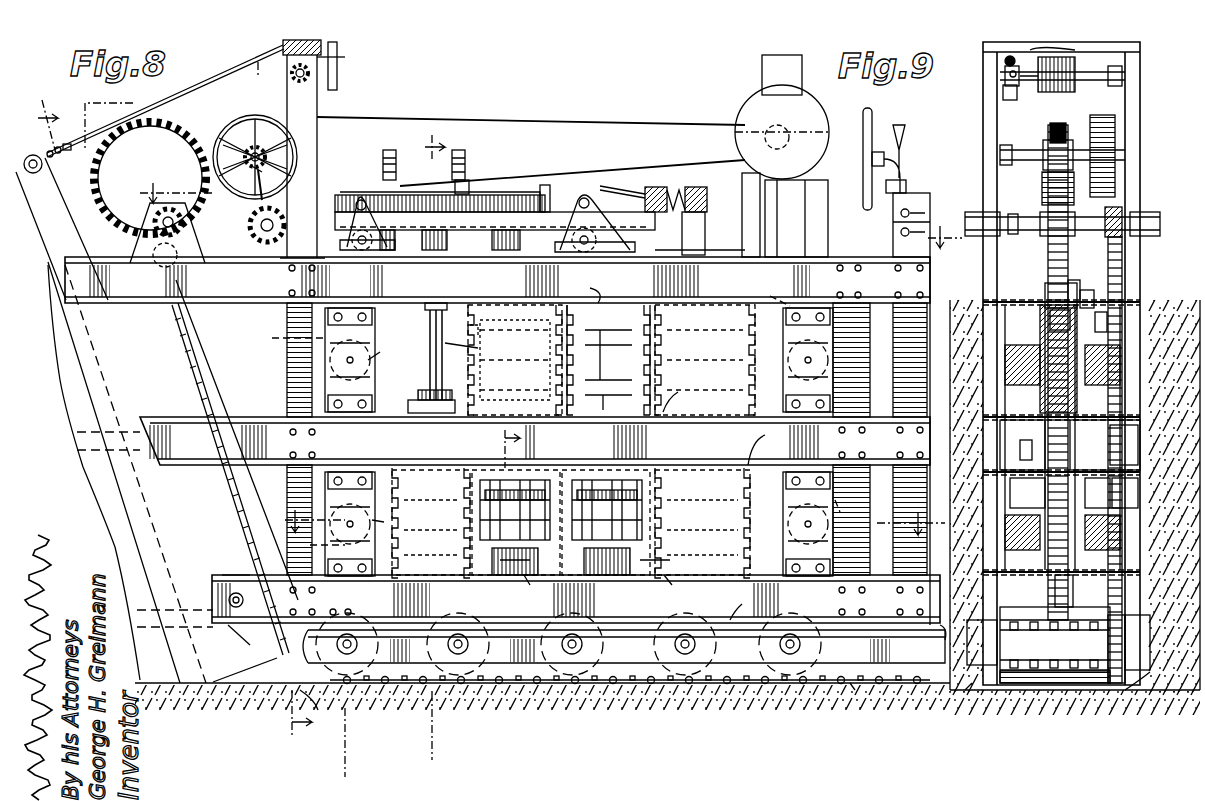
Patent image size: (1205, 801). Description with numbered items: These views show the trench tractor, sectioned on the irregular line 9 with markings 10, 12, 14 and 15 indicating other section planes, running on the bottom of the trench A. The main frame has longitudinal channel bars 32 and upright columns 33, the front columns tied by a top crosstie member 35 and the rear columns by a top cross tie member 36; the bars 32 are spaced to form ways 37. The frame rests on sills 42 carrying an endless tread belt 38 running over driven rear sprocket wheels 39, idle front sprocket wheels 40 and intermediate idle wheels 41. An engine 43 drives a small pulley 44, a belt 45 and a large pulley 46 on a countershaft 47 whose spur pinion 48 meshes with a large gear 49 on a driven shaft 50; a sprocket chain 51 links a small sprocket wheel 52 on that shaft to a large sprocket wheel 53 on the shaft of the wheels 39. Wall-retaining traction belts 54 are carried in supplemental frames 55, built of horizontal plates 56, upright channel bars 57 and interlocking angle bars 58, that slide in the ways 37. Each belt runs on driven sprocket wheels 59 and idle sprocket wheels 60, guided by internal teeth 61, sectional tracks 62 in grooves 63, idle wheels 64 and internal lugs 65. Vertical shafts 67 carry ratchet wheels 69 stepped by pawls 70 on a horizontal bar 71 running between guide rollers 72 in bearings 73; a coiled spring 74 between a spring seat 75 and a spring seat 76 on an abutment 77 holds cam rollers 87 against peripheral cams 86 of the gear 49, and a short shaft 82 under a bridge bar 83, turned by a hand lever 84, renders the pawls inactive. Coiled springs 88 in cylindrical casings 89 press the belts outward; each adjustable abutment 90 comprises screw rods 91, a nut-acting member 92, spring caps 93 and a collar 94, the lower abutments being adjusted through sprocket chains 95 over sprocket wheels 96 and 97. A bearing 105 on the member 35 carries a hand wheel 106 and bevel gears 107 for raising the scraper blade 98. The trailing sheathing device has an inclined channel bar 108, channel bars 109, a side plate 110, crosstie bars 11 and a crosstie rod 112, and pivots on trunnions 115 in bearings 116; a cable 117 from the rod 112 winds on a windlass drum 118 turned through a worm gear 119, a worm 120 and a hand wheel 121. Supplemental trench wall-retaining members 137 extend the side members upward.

In FIG. 8, the irregular section line 9 is at (300, 418).
In FIG. 8, the section line 10 is at (541, 215).
In FIG. 8, the crosstie bars 11 is at (611, 518).
In FIG. 8, the section line 12 is at (497, 447).
In FIG. 8, the section line 14 is at (443, 446).
In FIG. 8, the section line 15 is at (161, 419).
In FIG. 8, the longitudinally extended channel bars 32 is at (505, 346).
In FIG. 9, the longitudinally extended channel bars 32 is at (983, 262).
In FIG. 8, the upright channel bars or columns 33 is at (607, 439).
In FIG. 8, the top crosstie member 35 is at (905, 160).
In FIG. 9, the top cross tie member 36 is at (1078, 80).
In FIG. 8, the ways 37 is at (684, 266).
In FIG. 8, the endless tread belt 38 is at (700, 690).
In FIG. 9, the endless tread belt 38 is at (1020, 692).
In FIG. 8, the driven rear sprocket wheels 39 is at (312, 722).
In FIG. 8, the idle front sprocket wheels 40 is at (792, 688).
In FIG. 8, the intermediate idle wheels 41 is at (640, 690).
In FIG. 8, the sills 42 is at (624, 644).
In FIG. 8, the internal combustion engine 43 is at (760, 106).
In FIG. 8, the pulley 44 is at (800, 128).
In FIG. 8, the belt 45 is at (580, 118).
In FIG. 8, the large pulley 46 is at (256, 114).
In FIG. 9, the large pulley 46 is at (1115, 140).
In FIG. 8, the countershaft 47 is at (266, 160).
In FIG. 8, the spur pinion 48 is at (268, 178).
In FIG. 9, the spur pinion 48 is at (1050, 170).
In FIG. 8, the large gear 49 is at (247, 148).
In FIG. 9, the large gear 49 is at (1068, 128).
In FIG. 8, the driven shaft 50 is at (183, 220).
In FIG. 9, the driven shaft 50 is at (1150, 212).
In FIG. 8, the sprocket chain 51 is at (200, 350).
In FIG. 9, the sprocket chain 51 is at (1135, 692).
In FIG. 8, the small sprocket wheel 52 is at (158, 263).
In FIG. 9, the small sprocket wheel 52 is at (1120, 207).
In FIG. 9, the large sprocket wheel 53 is at (1110, 690).
In FIG. 8, the traction belts 54 is at (611, 438).
In FIG. 8, the supplemental frame 55 is at (666, 449).
In FIG. 9, the supplemental frame 55 is at (1018, 300).
In FIG. 9, the horizontal plates 56 is at (1030, 300).
In FIG. 8, the upright channel bars 57 is at (378, 372).
In FIG. 9, the upright angle bars 58 is at (1060, 320).
In FIG. 8, the driven rear sprocket wheels 59 is at (418, 470).
In FIG. 8, the idle sprocket wheels 60 is at (692, 472).
In FIG. 8, the internal teeth 61 is at (523, 581).
In FIG. 8, the endless sectional tracks 62 is at (664, 581).
In FIG. 8, the grooves 63 is at (460, 336).
In FIG. 8, the idle wheels 64 is at (642, 472).
In FIG. 8, the internal lugs 65 is at (548, 472).
In FIG. 8, the vertical shafts 67 is at (430, 323).
In FIG. 8, the ratchet wheels 69 is at (400, 195).
In FIG. 8, the pawls 70 is at (495, 192).
In FIG. 8, the horizontal bar 71 is at (545, 218).
In FIG. 8, the guide rollers 72 is at (358, 195).
In FIG. 8, the bearings 73 is at (598, 240).
In FIG. 8, the coiled spring 74 is at (688, 188).
In FIG. 8, the spring seat 75 is at (655, 188).
In FIG. 8, the spring seat 76 is at (742, 200).
In FIG. 8, the abutment 77 is at (708, 236).
In FIG. 8, the short shaft 82 is at (390, 150).
In FIG. 8, the bridge bar 83 is at (545, 185).
In FIG. 8, the hand lever 84 is at (470, 172).
In FIG. 8, the peripheral cams 86 is at (150, 178).
In FIG. 9, the peripheral cams 86 is at (1048, 200).
In FIG. 8, the cam rollers 87 is at (270, 244).
In FIG. 9, the coiled springs 88 is at (1142, 306).
In FIG. 8, the cylindrical casings 89 is at (554, 416).
In FIG. 9, the adjustable abutment 90 is at (1114, 445).
In FIG. 9, the screw rods 91 is at (1064, 459).
In FIG. 9, the nut-acting member 92 is at (1093, 288).
In FIG. 9, the spring caps 93 is at (1027, 491).
In FIG. 9, the collar 94 is at (1075, 280).
In FIG. 9, the sprocket chains 95 is at (1070, 428).
In FIG. 9, the sprocket wheels 96 is at (1061, 295).
In FIG. 9, the sprocket wheels 97 is at (1098, 493).
In FIG. 9, the scraper blade 98 is at (1125, 493).
In FIG. 8, the bearing 105 is at (893, 215).
In FIG. 8, the hand wheel 106 is at (796, 218).
In FIG. 8, the bevel gears 107 is at (895, 150).
In FIG. 8, the inclined channel bar 108 is at (78, 417).
In FIG. 8, the channel bars 109 is at (82, 463).
In FIG. 8, the side plate 110 is at (87, 390).
In FIG. 8, the upper crosstie rod 112 is at (64, 158).
In FIG. 8, the trunnions 115 is at (228, 600).
In FIG. 8, the bearings 116 is at (230, 623).
In FIG. 8, the cable 117 is at (165, 101).
In FIG. 9, the cable 117 is at (1048, 90).
In FIG. 8, the windlass drum 118 is at (322, 95).
In FIG. 8, the worm gear 119 is at (345, 78).
In FIG. 9, the worm gear 119 is at (1012, 82).
In FIG. 8, the worm 120 is at (340, 66).
In FIG. 9, the worm 120 is at (1003, 92).
In FIG. 8, the hand wheel 121 is at (330, 47).
In FIG. 8, the supplemental trench wall-retaining members 137 is at (263, 533).
In FIG. 8, the trench A is at (850, 685).
In FIG. 9, the trench A is at (968, 690).